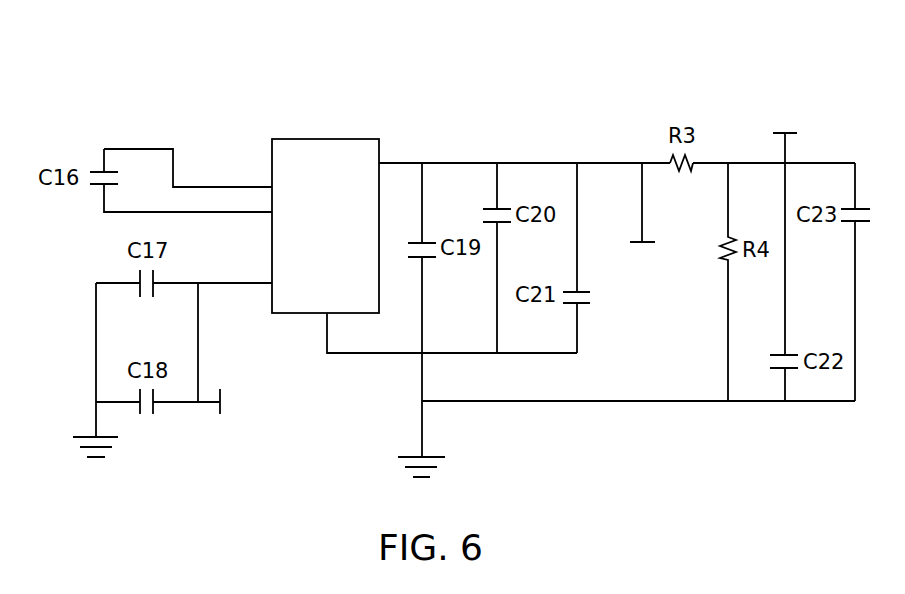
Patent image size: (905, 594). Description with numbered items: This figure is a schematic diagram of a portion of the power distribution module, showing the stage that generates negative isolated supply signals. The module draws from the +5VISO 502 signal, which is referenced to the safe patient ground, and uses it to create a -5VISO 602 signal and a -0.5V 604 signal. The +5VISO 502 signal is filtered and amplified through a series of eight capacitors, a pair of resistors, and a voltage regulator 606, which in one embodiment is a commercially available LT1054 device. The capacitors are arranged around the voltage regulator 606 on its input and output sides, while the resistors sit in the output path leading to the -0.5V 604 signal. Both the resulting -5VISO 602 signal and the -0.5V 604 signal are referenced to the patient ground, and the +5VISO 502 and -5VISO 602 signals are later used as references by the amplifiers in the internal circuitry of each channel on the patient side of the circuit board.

The +5VISO signal 502 is at (272, 427).
The -5VISO signal 602 is at (645, 282).
The -0.5V signal 604 is at (792, 97).
The voltage regulator 606 is at (306, 277).